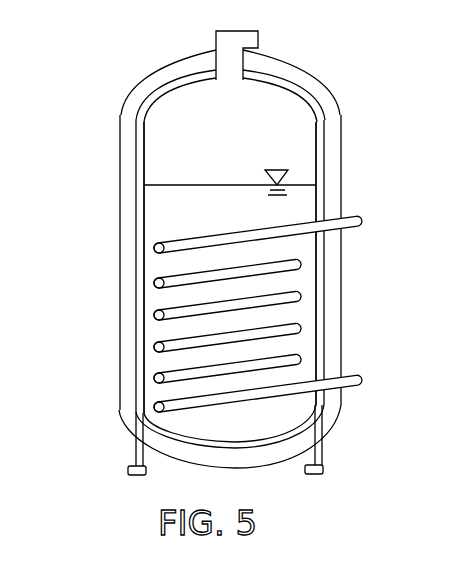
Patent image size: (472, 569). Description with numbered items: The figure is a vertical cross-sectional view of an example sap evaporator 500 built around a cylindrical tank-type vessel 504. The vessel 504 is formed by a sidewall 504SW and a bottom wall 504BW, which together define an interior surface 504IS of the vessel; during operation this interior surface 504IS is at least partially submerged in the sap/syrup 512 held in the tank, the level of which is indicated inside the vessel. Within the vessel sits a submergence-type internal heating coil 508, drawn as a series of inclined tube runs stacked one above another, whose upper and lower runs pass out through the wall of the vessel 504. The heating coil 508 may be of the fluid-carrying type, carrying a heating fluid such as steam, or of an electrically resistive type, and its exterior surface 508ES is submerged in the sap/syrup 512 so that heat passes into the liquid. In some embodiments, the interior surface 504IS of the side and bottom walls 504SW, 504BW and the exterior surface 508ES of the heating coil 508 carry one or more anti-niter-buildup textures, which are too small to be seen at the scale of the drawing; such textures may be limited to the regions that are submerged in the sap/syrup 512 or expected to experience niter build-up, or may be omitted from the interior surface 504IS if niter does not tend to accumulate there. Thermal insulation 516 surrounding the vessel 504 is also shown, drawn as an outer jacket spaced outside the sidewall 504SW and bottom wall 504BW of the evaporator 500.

The evaporator 500 is at (350, 91).
The tank-type vessel 504 is at (239, 264).
The interior surface 504IS is at (143, 202).
The sidewall 504SW is at (325, 272).
The bottom wall 504BW is at (202, 445).
The heating coil 508 is at (201, 313).
The exterior surface 508ES is at (175, 252).
The sap/syrup 512 is at (190, 186).
The thermal insulation 516 is at (342, 150).